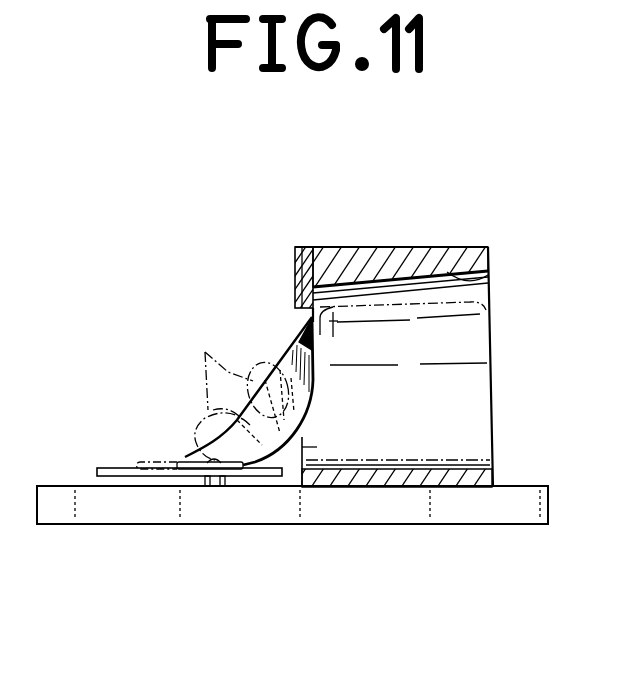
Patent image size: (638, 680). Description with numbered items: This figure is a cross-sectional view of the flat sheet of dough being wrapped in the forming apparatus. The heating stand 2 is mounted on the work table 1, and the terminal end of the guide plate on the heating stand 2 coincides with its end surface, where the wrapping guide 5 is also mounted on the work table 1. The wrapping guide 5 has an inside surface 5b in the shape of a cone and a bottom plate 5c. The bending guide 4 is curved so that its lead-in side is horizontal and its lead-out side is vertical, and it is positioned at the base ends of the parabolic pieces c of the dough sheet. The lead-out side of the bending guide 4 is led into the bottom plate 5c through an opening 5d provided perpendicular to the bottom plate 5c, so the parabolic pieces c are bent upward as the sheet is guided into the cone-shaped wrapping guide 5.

The work table 1 is at (390, 512).
The heating stand 2 is at (113, 468).
The bending guide 4 is at (200, 458).
The wrapping guide 5 is at (383, 248).
The inside surface 5b is at (490, 283).
The bottom plate 5c is at (295, 265).
The opening 5d is at (296, 453).
The parabolic pieces c is at (245, 386).